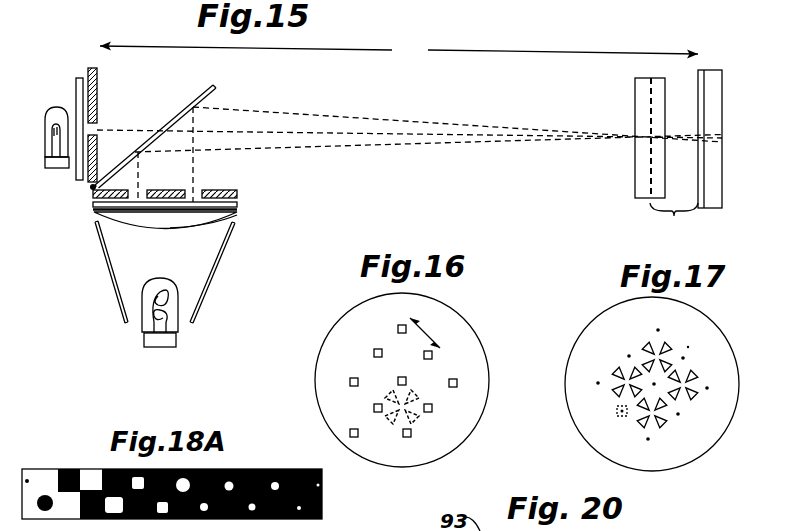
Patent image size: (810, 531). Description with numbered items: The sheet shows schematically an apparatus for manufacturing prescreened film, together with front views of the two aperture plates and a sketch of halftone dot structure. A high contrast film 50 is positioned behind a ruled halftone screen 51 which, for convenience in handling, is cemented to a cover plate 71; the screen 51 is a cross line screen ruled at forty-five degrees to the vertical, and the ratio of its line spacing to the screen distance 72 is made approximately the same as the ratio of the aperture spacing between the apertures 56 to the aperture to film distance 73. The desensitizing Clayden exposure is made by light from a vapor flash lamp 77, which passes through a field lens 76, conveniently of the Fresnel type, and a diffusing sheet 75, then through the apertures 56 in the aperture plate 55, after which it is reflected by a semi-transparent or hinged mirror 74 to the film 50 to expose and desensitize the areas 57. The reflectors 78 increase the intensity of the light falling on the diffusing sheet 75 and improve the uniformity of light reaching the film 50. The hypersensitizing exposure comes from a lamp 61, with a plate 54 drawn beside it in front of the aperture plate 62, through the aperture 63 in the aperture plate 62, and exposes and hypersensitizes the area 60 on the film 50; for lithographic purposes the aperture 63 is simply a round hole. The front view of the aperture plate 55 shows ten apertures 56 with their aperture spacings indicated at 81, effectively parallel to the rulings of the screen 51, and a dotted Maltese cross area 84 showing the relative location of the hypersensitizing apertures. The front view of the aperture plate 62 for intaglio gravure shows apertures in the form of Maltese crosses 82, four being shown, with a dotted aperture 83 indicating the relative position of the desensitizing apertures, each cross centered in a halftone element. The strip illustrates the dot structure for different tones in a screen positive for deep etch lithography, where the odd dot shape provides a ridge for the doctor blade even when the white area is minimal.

In FIG. 15, the high contrast film 50 is at (705, 85).
In FIG. 15, the ruled halftone screen 51 is at (648, 98).
In FIG. 15, the diffuser plate 54 is at (78, 82).
In FIG. 15, the aperture plate 55 is at (237, 194).
In FIG. 16, the aperture plate 55 is at (346, 343).
In FIG. 15, the apertures 56 is at (147, 186).
In FIG. 16, the apertures 56 is at (350, 383).
In FIG. 15, the desensitized areas 57 is at (705, 143).
In FIG. 15, the hypersensitized area 60 is at (700, 140).
In FIG. 15, the lamp 61 is at (57, 110).
In FIG. 15, the aperture plate 62 is at (100, 80).
In FIG. 17, the aperture plate 62 is at (600, 332).
In FIG. 15, the aperture 63 is at (100, 127).
In FIG. 15, the cover plate 71 is at (657, 85).
In FIG. 15, the screen distance 72 is at (674, 224).
In FIG. 15, the aperture to film distance 73 is at (399, 54).
In FIG. 15, the mirror 74 is at (200, 97).
In FIG. 15, the diffusing sheet 75 is at (238, 209).
In FIG. 15, the field lens 76 is at (237, 217).
In FIG. 15, the vapor flash lamp 77 is at (178, 330).
In FIG. 15, the reflectors 78 is at (112, 287).
In FIG. 16, the aperture spacings 81 is at (425, 330).
In FIG. 17, the Maltese crosses 82 is at (690, 400).
In FIG. 17, the aperture 83 is at (615, 413).
In FIG. 16, the Maltese cross area 84 is at (420, 420).